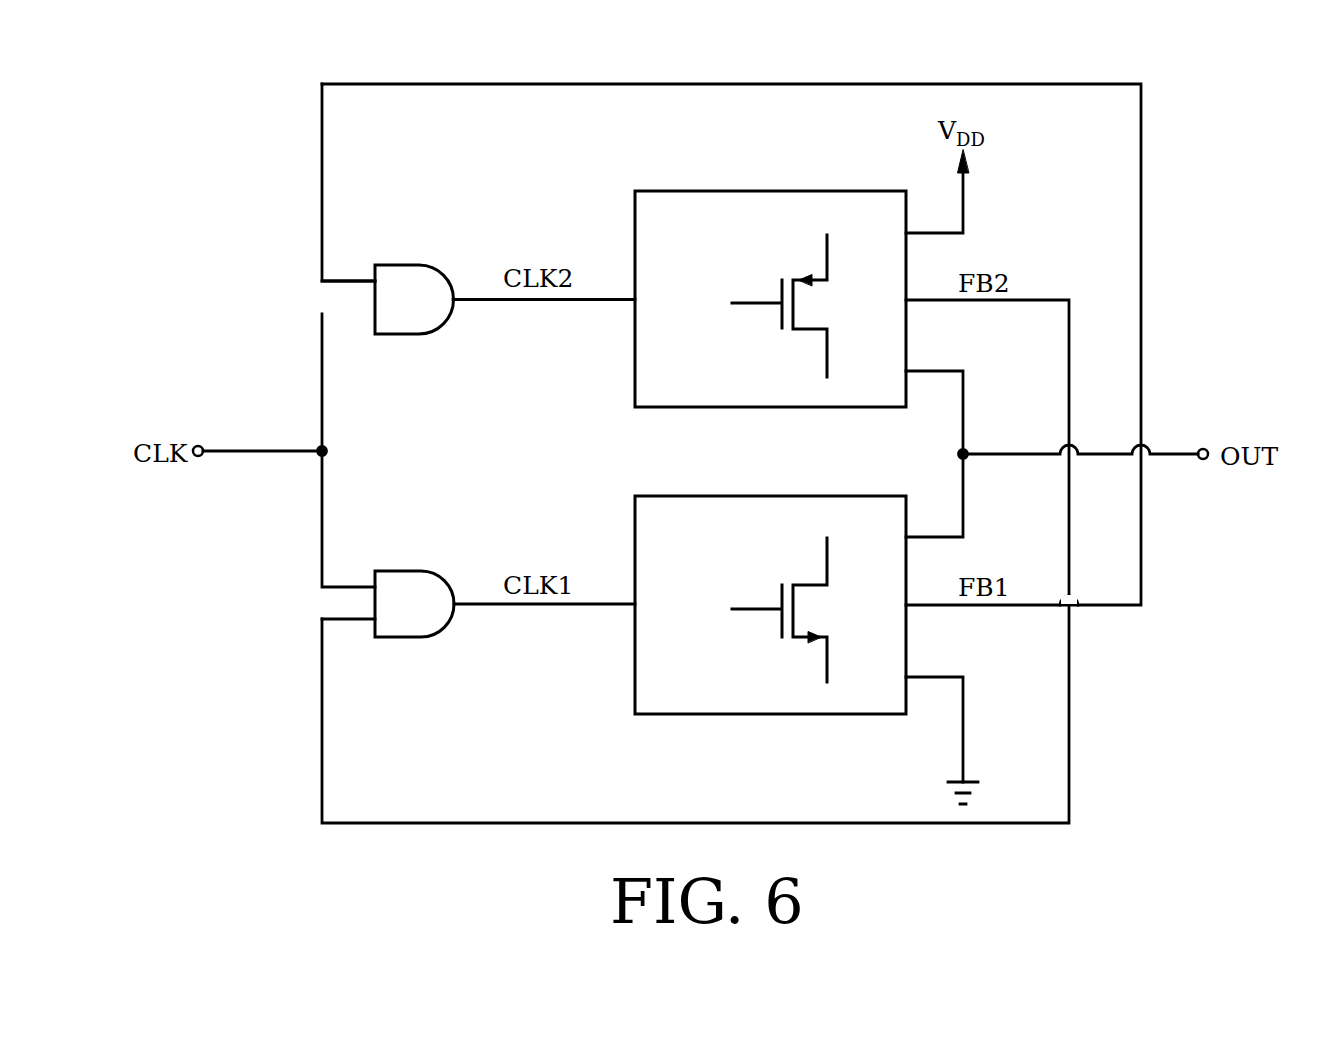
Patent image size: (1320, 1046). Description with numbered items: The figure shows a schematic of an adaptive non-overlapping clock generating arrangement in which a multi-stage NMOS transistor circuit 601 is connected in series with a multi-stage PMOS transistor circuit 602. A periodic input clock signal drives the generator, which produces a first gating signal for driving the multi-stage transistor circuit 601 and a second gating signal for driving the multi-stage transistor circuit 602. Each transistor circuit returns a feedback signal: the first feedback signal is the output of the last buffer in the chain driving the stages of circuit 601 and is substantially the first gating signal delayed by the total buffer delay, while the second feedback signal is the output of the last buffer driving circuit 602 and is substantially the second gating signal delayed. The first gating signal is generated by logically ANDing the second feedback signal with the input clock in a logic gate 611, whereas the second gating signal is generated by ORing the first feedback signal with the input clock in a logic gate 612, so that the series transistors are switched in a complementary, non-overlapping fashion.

The multi-stage NMOS transistor circuit 601 is at (720, 495).
The multi-stage PMOS transistor circuit 602 is at (720, 190).
The logic gate 611 is at (400, 570).
The logic gate 612 is at (400, 264).